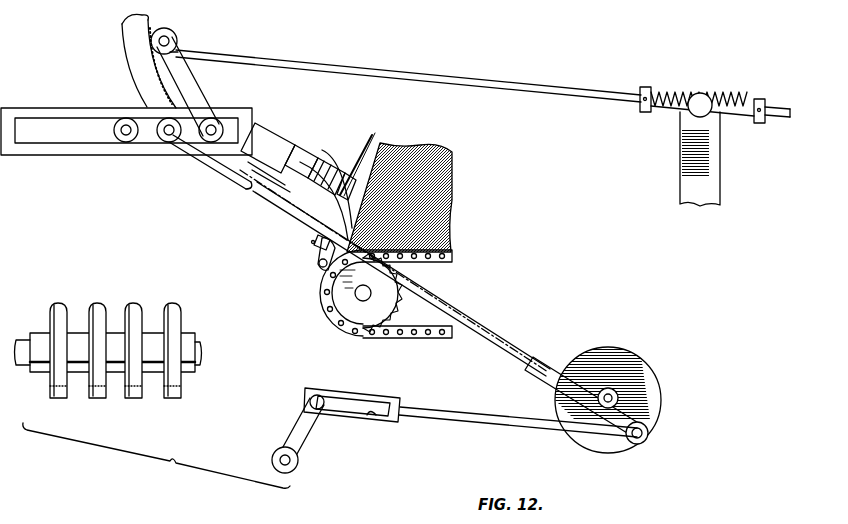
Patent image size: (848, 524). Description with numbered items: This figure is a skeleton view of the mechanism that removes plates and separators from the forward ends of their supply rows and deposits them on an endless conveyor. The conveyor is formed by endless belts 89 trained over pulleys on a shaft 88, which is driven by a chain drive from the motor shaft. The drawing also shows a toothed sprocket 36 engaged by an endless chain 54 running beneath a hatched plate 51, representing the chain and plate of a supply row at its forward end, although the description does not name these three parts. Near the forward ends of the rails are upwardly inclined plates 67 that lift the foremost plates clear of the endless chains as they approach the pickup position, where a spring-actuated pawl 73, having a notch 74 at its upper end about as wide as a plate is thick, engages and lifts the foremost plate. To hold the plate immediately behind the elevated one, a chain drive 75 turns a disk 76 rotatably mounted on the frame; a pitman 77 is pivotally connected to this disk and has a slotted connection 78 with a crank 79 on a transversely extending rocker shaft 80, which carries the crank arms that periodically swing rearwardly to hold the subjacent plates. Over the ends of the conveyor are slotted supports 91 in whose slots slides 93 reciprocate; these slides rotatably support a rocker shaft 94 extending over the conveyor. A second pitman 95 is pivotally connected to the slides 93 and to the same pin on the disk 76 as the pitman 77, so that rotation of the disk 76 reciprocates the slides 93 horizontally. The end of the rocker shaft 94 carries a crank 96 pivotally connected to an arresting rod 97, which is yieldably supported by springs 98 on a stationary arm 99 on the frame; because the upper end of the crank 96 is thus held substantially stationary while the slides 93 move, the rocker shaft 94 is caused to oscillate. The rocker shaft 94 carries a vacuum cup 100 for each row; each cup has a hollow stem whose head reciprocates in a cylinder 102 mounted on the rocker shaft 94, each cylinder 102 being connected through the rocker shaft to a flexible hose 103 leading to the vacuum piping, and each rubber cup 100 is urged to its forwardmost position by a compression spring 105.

The sprocket 36 is at (358, 297).
The hatched plate 51 is at (440, 178).
The chain 54 is at (441, 262).
The upwardly inclined plate 67 is at (316, 246).
The spring-actuated pawl 73 is at (312, 242).
The notch 74 is at (332, 234).
The chain drive 75 is at (330, 252).
The disk 76 is at (653, 388).
The pitman 77 is at (470, 413).
The slotted connection 78 is at (375, 418).
The crank 79 is at (298, 432).
The rocker shaft 80 is at (289, 464).
The shaft 88 is at (197, 352).
The endless belt 89 is at (172, 400).
The slotted support 91 is at (48, 116).
The slide 93 is at (152, 142).
The rocker shaft 94 is at (214, 128).
The pitman 95 is at (543, 366).
The crank 96 is at (190, 80).
The arresting rod 97 is at (497, 80).
The spring 98 is at (722, 96).
The stationary arm 99 is at (708, 200).
The vacuum cup 100 is at (324, 166).
The cylinder 102 is at (267, 142).
The flexible hose 103 is at (134, 40).
The compression spring 105 is at (326, 162).